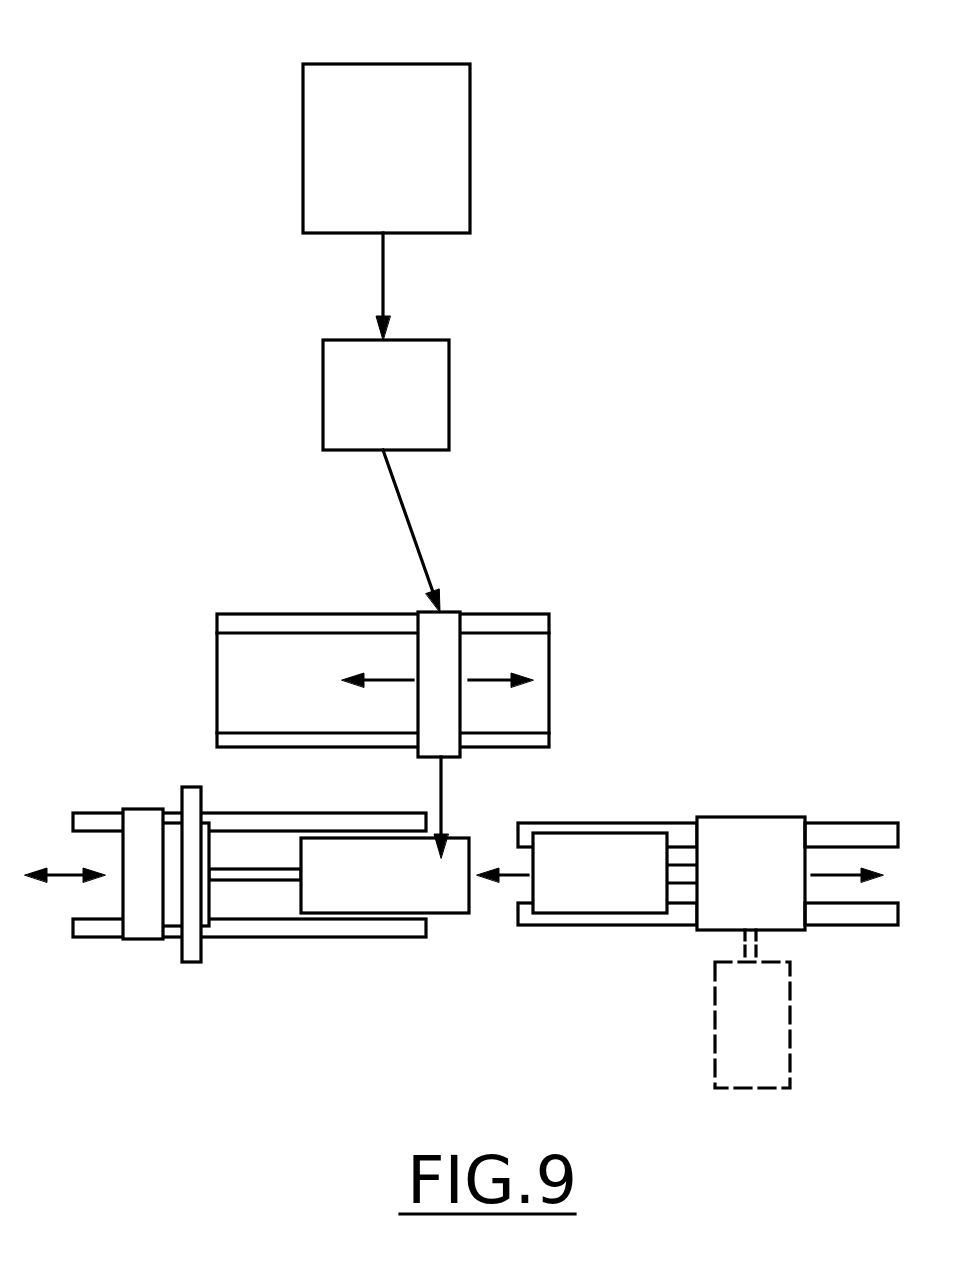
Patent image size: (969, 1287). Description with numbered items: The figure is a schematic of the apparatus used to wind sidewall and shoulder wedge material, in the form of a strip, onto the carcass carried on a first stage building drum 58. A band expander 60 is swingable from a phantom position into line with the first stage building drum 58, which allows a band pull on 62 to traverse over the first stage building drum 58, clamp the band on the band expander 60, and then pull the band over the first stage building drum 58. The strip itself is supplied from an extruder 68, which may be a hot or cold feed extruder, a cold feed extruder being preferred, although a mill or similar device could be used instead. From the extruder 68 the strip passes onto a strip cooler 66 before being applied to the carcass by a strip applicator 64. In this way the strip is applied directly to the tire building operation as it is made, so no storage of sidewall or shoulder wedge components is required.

The first stage building drum 58 is at (433, 902).
The band expander 60 is at (604, 850).
The band pull on 62 is at (192, 800).
The strip applicator 64 is at (432, 622).
The strip cooler 66 is at (333, 388).
The extruder 68 is at (323, 196).